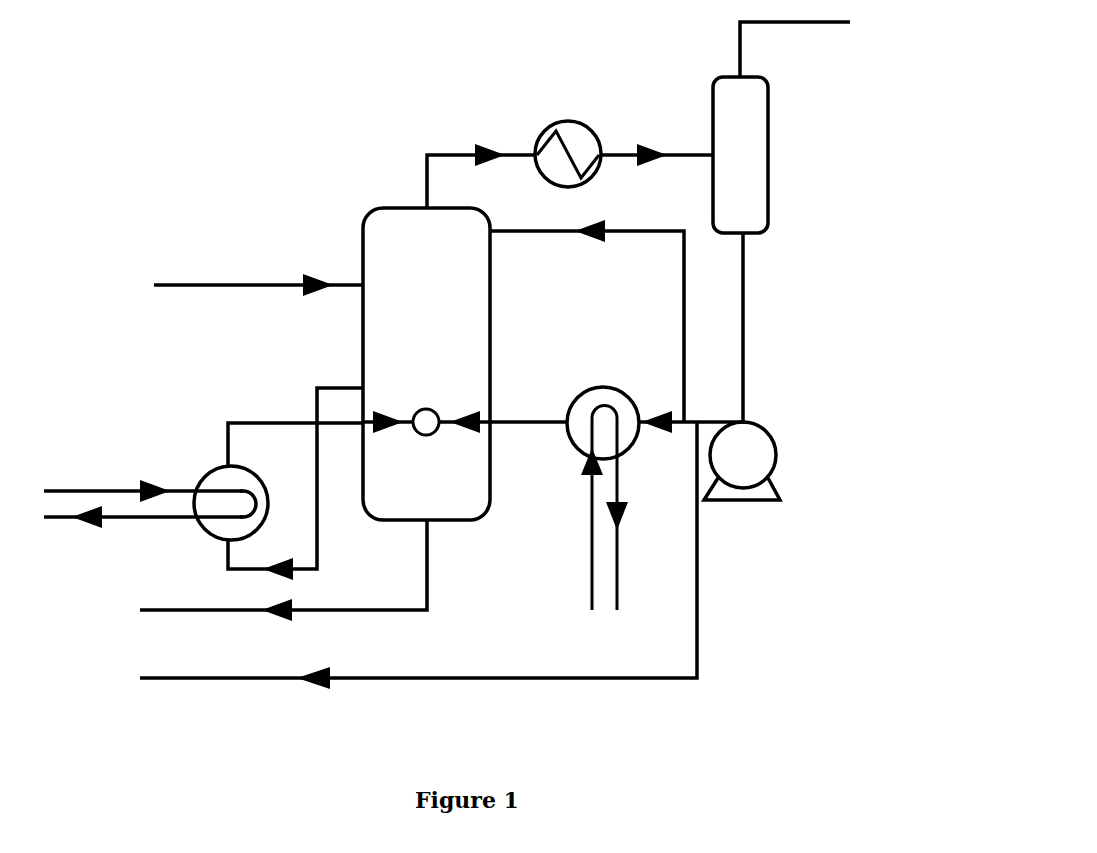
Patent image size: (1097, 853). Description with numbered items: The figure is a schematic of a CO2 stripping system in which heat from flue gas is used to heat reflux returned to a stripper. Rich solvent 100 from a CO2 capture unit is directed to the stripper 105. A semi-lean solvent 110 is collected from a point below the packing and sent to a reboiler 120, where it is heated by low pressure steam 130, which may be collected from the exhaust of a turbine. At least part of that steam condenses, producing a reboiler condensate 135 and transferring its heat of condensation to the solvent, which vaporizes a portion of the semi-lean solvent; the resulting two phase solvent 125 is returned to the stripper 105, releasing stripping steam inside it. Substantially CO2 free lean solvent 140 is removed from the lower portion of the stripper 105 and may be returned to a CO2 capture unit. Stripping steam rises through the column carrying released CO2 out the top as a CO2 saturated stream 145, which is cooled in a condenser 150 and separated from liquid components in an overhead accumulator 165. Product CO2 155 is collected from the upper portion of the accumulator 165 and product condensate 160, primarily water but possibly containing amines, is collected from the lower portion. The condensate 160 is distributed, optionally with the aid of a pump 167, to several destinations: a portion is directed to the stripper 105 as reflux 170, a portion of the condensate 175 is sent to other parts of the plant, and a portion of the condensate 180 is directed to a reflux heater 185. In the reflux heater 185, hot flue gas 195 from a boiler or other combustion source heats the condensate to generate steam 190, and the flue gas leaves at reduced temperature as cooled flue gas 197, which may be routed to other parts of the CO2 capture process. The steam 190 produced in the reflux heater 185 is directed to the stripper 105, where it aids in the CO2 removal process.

The rich solvent 100 is at (220, 280).
The stripper 105 is at (447, 342).
The semi-lean solvent 110 is at (318, 378).
The reboiler 120 is at (205, 462).
The two phase solvent 125 is at (232, 415).
The low pressure steam 130 is at (115, 485).
The reboiler condensate 135 is at (138, 527).
The lean solvent 140 is at (175, 617).
The CO2 saturated stream 145 is at (415, 160).
The condenser 150 is at (530, 135).
The product CO2 155 is at (732, 42).
The product condensate 160 is at (750, 330).
The accumulator 165 is at (773, 160).
The pump 167 is at (775, 430).
The reflux 170 is at (635, 240).
The condensate directed to other parts of the plant 175 is at (348, 672).
The condensate directed to reflux heater 180 is at (655, 413).
The reflux heater 185 is at (578, 388).
The steam 190 is at (540, 430).
The hot flue gas 195 is at (583, 550).
The cooled flue gas 197 is at (625, 553).